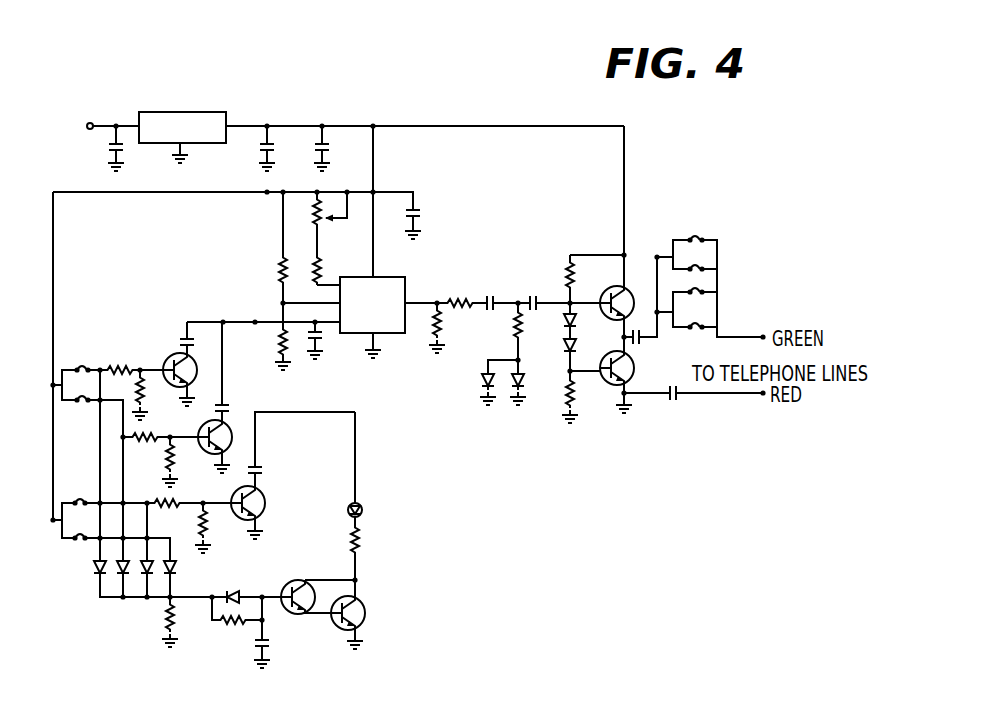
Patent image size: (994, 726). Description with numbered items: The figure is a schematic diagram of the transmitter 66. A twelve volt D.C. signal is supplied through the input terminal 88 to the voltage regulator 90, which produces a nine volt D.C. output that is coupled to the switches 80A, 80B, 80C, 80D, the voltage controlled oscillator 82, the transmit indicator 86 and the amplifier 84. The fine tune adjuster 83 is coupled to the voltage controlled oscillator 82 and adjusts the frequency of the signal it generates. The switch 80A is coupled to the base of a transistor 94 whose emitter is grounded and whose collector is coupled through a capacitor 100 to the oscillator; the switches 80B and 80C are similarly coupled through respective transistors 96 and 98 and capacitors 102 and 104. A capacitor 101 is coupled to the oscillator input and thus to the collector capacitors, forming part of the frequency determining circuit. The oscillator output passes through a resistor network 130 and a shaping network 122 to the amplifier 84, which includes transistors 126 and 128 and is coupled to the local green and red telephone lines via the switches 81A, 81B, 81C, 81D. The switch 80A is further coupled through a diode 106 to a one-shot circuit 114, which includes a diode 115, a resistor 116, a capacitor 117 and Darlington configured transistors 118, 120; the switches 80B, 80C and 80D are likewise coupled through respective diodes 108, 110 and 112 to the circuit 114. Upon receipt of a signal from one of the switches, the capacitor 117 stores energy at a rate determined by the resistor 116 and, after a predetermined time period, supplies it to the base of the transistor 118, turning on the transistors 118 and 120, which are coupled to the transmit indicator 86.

The transmitter 66 is at (393, 80).
The input terminal 88 is at (90, 114).
The voltage regulator 90 is at (182, 137).
The fine tune adjuster 83 is at (337, 228).
The voltage controlled oscillator 82 is at (296, 281).
The resistor network 130 is at (470, 282).
The capacitor 101 is at (328, 347).
The capacitor 102 is at (230, 410).
The capacitor 100 is at (173, 342).
The switch 80A is at (116, 336).
The switch 80B is at (83, 407).
The switch 80C is at (91, 487).
The switch 80D is at (78, 547).
The transistor 94 is at (164, 388).
The transistor 96 is at (198, 452).
The transistor 98 is at (268, 512).
The capacitor 104 is at (264, 470).
The diode 106 is at (82, 587).
The diode 108 is at (118, 572).
The diode 110 is at (140, 577).
The diode 112 is at (176, 568).
The one-shot circuit 114 is at (235, 656).
The diode 115 is at (273, 568).
The resistor 116 is at (230, 628).
The capacitor 117 is at (270, 640).
The transistor 118 is at (322, 553).
The transistor 120 is at (372, 615).
The transmit indicator 86 is at (366, 515).
The amplifier 84 is at (565, 456).
The shaping network 122 is at (467, 402).
The transistor 126 is at (630, 282).
The transistor 128 is at (633, 380).
The switch 81A is at (705, 230).
The switch 81B is at (703, 265).
The switch 81C is at (698, 290).
The switch 81D is at (698, 318).